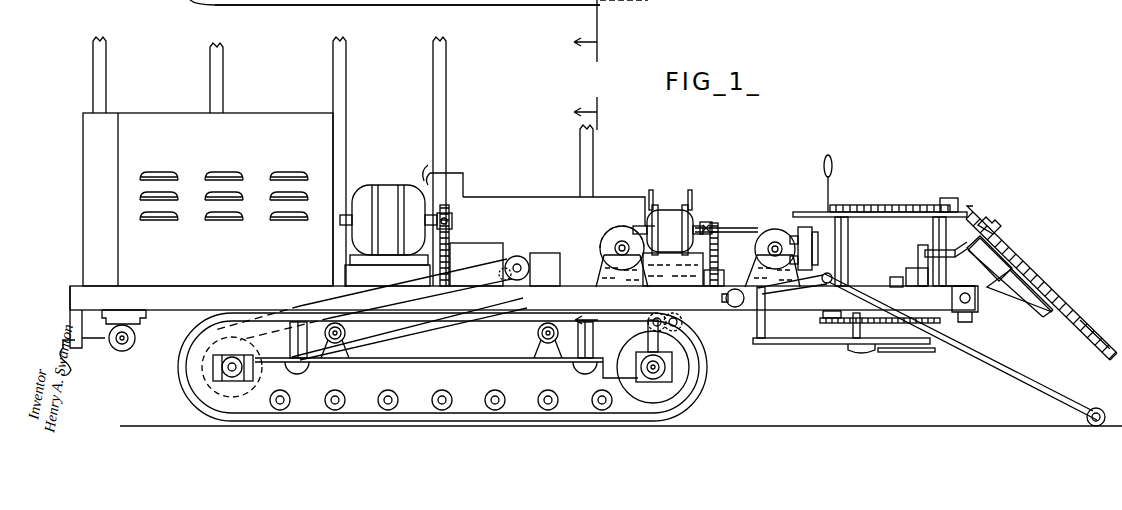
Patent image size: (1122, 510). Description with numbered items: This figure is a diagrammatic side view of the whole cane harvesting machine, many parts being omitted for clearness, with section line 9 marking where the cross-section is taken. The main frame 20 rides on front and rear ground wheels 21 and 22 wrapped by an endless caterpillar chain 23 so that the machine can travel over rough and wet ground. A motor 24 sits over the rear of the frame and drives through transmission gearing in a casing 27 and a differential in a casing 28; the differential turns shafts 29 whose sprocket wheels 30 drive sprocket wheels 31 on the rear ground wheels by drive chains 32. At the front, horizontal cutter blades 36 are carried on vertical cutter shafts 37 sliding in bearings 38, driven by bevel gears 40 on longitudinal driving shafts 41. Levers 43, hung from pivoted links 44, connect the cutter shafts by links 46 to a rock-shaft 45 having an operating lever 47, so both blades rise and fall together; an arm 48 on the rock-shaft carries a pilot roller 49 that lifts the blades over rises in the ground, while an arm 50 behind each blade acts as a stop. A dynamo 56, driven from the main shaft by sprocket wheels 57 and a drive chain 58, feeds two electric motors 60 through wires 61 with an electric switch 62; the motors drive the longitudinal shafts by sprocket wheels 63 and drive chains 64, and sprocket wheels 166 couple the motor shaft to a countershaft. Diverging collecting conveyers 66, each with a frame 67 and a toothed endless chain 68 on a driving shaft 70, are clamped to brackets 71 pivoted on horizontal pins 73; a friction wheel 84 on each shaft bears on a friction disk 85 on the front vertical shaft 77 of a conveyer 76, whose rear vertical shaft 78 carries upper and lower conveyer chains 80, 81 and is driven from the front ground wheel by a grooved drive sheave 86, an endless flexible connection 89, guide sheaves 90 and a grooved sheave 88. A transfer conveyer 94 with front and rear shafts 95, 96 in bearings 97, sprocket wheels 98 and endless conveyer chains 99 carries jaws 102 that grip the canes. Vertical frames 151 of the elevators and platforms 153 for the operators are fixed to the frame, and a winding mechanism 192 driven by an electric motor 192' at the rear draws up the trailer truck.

The section line 9— 9 is at (592, 164).
The main frame 20 is at (180, 312).
The front ground wheel 21 is at (683, 385).
The rear ground wheel 22 is at (198, 380).
The endless caterpillar chain 23 is at (366, 404).
The motor 24 is at (208, 199).
The casing 27 is at (468, 244).
The casing 28 is at (530, 276).
The shaft 29 is at (520, 258).
The sprocket wheel 30 is at (546, 256).
The sprocket wheel 31 is at (178, 366).
The drive chain 32 is at (388, 332).
The horizontal cutter blade 36 is at (915, 352).
The vertical cutter shaft 37 is at (917, 250).
The bearing 38 is at (905, 270).
The bevel gear 40 is at (935, 290).
The longitudinal driving shaft 41 is at (888, 281).
The lever 43 is at (805, 345).
The pivoted link 44 is at (856, 345).
The rock-shaft 45 is at (832, 274).
The link 46 is at (758, 325).
The operating lever 47 is at (826, 158).
The arm 48 is at (984, 365).
The pilot roller 49 is at (1088, 410).
The arm 50 is at (863, 352).
The dynamo 56 is at (376, 188).
The sprocket wheel 57 is at (453, 222).
The drive chain 58 is at (450, 208).
The electric motor 60 is at (668, 208).
The wires 61 is at (536, 194).
The electric switch 62 is at (426, 170).
The sprocket wheel 63 is at (720, 236).
The drive chain 64 is at (720, 258).
The collecting conveyer 66 is at (1046, 272).
The conveyer frame 67 is at (1030, 255).
The endless chain 68 is at (1068, 292).
The driving shaft 70 is at (996, 216).
The bracket 71 is at (968, 314).
The horizontal pin 73 is at (980, 296).
The conveyer 76 is at (890, 206).
The front vertical shaft 77 is at (950, 206).
The rear vertical shaft 78 is at (838, 206).
The upper conveyer chain 80 is at (850, 206).
The lower conveyer chain 81 is at (820, 321).
The friction wheel 84 is at (1012, 235).
The friction disk 85 is at (946, 250).
The grooved drive sheave 86 is at (690, 368).
The grooved sheave 88 is at (824, 312).
The endless flexible connection 89 is at (718, 312).
The guide sheave 90 is at (650, 332).
The transfer conveyer 94 is at (632, 206).
The front shaft 95 is at (775, 240).
The rear shaft 96 is at (622, 240).
The bearing 97 is at (694, 271).
The sprocket wheel 98 is at (606, 238).
The endless conveyer chain 99 is at (752, 228).
The jaw 102 is at (690, 195).
The vertical frame 151 is at (103, 70).
The platform 153 is at (268, 2).
The sprocket wheel 166 is at (704, 222).
The winding mechanism 192 is at (84, 363).
The electric motor 192' is at (117, 358).